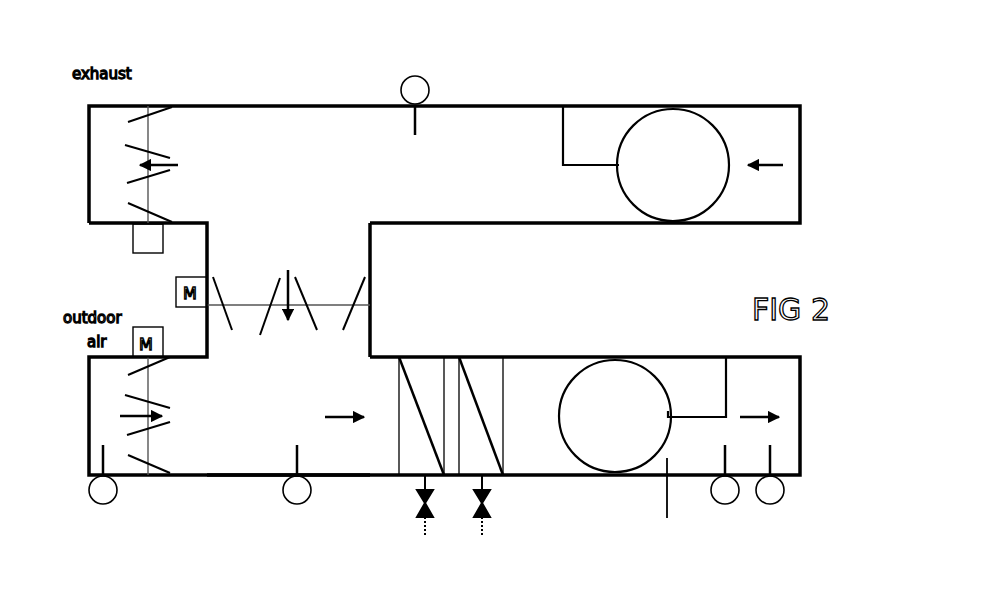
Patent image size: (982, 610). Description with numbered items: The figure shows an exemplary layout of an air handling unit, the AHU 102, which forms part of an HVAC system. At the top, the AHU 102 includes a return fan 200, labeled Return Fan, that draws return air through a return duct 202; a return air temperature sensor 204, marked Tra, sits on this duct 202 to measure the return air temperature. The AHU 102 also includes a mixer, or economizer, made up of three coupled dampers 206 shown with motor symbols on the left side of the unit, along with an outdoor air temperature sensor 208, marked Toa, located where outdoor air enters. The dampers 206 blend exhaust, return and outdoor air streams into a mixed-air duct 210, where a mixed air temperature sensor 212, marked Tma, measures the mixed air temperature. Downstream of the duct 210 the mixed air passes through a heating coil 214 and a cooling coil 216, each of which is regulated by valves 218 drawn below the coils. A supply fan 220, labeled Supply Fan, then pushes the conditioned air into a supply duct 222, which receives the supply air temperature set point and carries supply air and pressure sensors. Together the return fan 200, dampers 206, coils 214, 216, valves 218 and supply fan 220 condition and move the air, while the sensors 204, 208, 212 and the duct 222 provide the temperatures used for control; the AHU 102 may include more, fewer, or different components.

The air handling unit 102 is at (518, 90).
The return fan 200 is at (682, 135).
The duct 202 is at (488, 180).
The return air temperature sensor 204 is at (412, 88).
The coupled dampers 206 is at (147, 222).
The outdoor air temperature sensor 208 is at (110, 493).
The duct 210 is at (237, 460).
The mixed air temperature sensor 212 is at (305, 493).
The heating coil 214 is at (428, 462).
The cooling coil 216 is at (487, 462).
The valves 218 is at (421, 513).
The supply fan 220 is at (608, 460).
The duct 222 is at (742, 497).